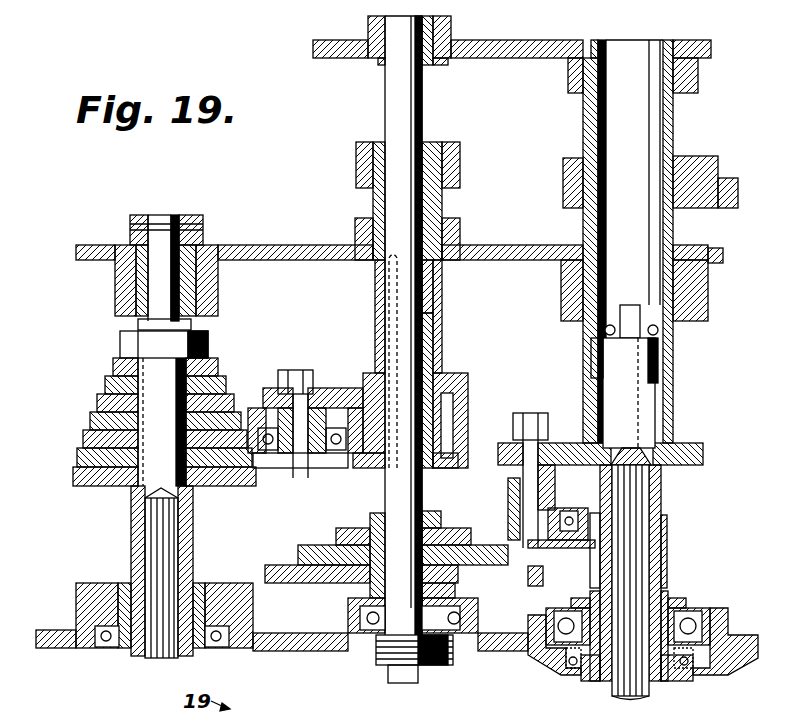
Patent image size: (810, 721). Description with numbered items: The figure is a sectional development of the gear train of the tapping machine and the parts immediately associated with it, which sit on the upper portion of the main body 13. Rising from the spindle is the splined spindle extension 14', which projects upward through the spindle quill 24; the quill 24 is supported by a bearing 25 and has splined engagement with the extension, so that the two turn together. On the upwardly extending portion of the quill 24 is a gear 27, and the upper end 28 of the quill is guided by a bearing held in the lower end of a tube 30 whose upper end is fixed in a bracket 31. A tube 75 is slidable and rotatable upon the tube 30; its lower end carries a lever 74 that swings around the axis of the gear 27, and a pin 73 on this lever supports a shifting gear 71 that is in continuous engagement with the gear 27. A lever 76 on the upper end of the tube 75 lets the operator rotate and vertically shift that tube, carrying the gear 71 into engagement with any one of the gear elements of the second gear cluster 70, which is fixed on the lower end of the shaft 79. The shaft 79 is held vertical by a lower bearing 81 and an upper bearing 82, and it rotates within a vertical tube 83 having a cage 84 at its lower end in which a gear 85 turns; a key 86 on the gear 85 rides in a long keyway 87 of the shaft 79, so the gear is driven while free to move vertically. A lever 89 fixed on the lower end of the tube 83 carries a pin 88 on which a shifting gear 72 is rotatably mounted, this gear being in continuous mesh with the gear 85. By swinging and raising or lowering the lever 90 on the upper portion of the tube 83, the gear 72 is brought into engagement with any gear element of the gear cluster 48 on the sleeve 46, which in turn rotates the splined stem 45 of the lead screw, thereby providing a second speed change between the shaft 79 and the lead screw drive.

The main body 13 is at (330, 637).
The splined spindle extension 14' is at (637, 584).
The spindle quill 24 is at (655, 588).
The bearing 25 is at (686, 611).
The gear 27 is at (660, 520).
The upper end of the quill 28 is at (640, 403).
The tube 30 is at (665, 112).
The bracket 31 is at (520, 50).
The splined stem 45 is at (150, 547).
The sleeve 46 is at (185, 547).
The gear cluster 48 is at (80, 395).
The second gear cluster 70 is at (318, 529).
The shifting gear 71 is at (578, 540).
The shifting gear 72 is at (346, 458).
The pin 73 is at (547, 480).
The lever 74 is at (556, 438).
The tube 75 is at (667, 343).
The lever 76 is at (705, 158).
The shaft 79 is at (385, 96).
The lower bearing 81 is at (452, 603).
The upper bearing 82 is at (425, 45).
The vertical tube 83 is at (435, 272).
The cage 84 is at (455, 378).
The gear 85 is at (440, 408).
The key 86 is at (393, 392).
The keyway 87 is at (382, 281).
The pin 88 is at (290, 362).
The lever 89 is at (328, 380).
The lever 90 is at (452, 153).